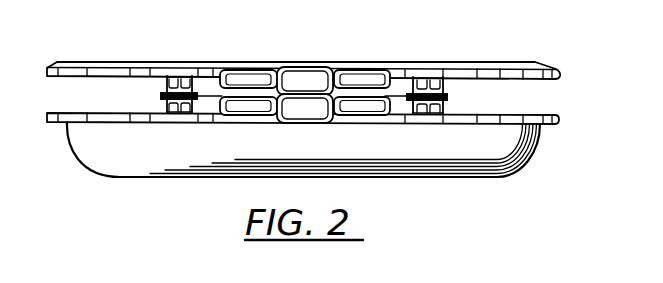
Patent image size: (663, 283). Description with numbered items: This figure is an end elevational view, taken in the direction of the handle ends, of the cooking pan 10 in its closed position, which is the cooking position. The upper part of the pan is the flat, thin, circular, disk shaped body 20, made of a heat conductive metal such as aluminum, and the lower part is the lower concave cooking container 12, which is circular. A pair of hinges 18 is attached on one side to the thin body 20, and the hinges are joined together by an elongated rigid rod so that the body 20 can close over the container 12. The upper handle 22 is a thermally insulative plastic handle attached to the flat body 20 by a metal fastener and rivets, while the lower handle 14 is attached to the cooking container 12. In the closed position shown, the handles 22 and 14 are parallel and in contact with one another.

The cooking pan 10 is at (306, 132).
The lower concave cooking container 12 is at (509, 175).
The handle 14 is at (305, 108).
The hinges 18 is at (443, 112).
The flat disk shaped body 20 is at (452, 64).
The handle 22 is at (306, 79).